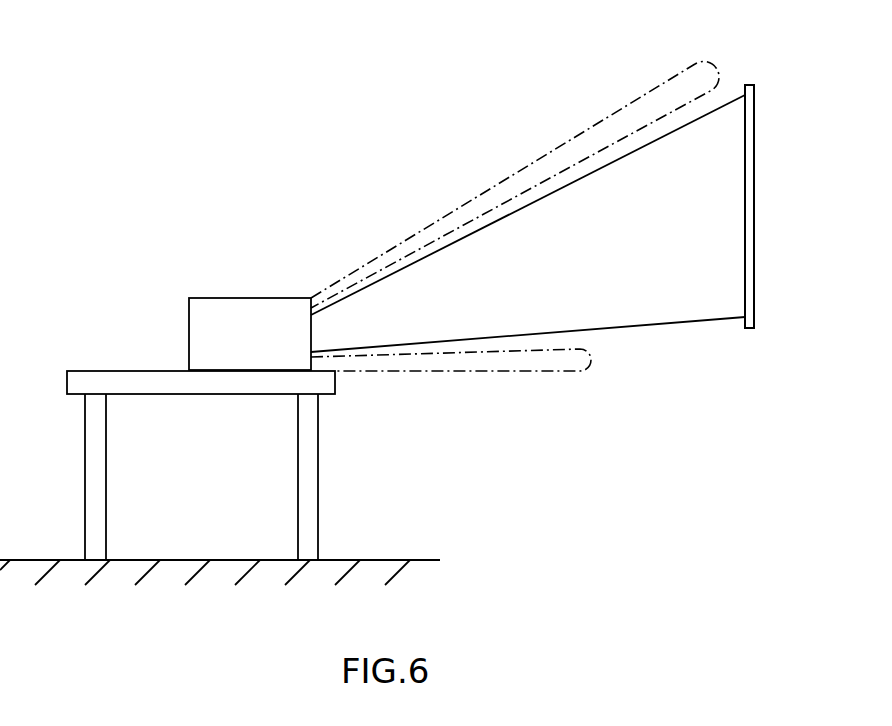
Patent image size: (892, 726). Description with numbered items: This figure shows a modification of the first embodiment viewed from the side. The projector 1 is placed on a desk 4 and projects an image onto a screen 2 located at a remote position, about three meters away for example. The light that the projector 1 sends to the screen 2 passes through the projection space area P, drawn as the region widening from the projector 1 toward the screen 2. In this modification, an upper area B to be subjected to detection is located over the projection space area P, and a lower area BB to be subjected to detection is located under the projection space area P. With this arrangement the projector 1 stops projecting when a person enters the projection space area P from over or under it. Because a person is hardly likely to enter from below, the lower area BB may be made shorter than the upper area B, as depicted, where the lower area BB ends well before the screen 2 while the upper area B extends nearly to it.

The projector 1 is at (189, 321).
The screen 2 is at (754, 222).
The desk 4 is at (193, 383).
The projection space area P is at (712, 152).
The upper area to be subjected to detection B is at (630, 103).
The lower area to be subjected to detection BB is at (592, 372).